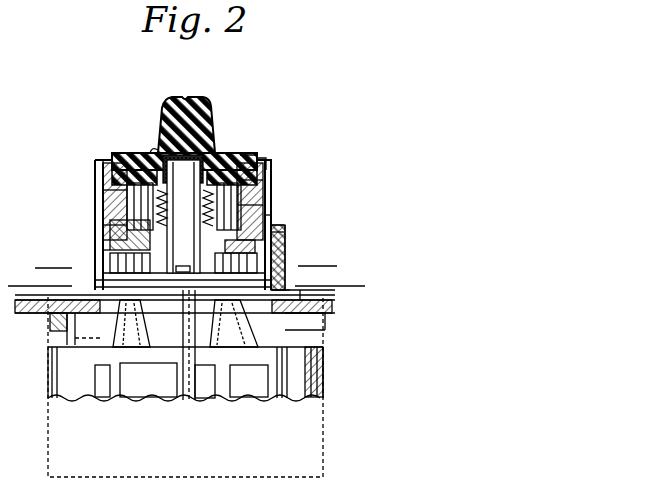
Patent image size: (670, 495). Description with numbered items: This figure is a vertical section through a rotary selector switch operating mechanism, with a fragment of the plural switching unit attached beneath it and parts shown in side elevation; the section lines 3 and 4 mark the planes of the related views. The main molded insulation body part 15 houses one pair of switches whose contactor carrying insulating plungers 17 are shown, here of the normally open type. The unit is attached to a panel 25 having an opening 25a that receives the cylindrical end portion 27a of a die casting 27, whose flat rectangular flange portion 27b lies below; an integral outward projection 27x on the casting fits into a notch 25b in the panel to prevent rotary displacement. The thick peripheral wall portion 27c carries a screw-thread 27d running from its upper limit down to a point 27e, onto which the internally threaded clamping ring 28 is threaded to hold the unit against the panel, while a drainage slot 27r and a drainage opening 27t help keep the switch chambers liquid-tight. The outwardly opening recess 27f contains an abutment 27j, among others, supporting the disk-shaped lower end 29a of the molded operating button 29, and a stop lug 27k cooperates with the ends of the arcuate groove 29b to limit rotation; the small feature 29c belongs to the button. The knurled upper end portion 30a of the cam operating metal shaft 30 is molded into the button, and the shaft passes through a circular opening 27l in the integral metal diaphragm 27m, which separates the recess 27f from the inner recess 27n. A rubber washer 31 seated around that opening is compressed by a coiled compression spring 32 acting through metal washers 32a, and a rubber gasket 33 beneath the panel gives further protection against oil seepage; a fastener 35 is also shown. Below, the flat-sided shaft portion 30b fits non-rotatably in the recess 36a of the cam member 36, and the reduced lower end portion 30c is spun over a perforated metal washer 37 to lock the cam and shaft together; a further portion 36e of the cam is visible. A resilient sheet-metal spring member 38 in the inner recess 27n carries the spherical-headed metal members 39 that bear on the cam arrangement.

The section line 3- 3 is at (42, 282).
The section line 4- 4 is at (17, 266).
The main molded insulation body part 15 is at (65, 385).
The contactor carrying insulating plunger 17 is at (125, 348).
The panel 25 is at (325, 304).
The opening 25a is at (310, 318).
The notch 25b is at (50, 321).
The die casting 27 is at (273, 196).
The cylindrical end portion 27a is at (273, 186).
The flange portion 27b is at (320, 331).
The peripheral wall portion 27c is at (100, 272).
The screw-thread 27d is at (283, 246).
The point 27e is at (286, 284).
The outwardly opening recess 27f is at (104, 170).
The abutment 27j is at (112, 197).
The stop lug 27k is at (272, 171).
The circular opening 27l is at (112, 228).
The integral metal diaphragm 27m is at (275, 226).
The inner recess 27n is at (278, 233).
The drainage slot 27r is at (284, 259).
The drainage opening 27t is at (272, 220).
The outward projection 27x is at (75, 341).
The clamping ring 28 is at (112, 234).
The operating button 29 is at (214, 124).
The disk-shaped lower end 29a is at (152, 152).
The arcuate groove 29b is at (262, 160).
The knob notch 29c is at (186, 98).
The cam operating metal shaft 30 is at (190, 223).
The upper end portion 30a is at (214, 147).
The flat-sided shaft portion 30b is at (138, 350).
The reduced lower end portion 30c is at (189, 400).
The rubber washer 31 is at (270, 210).
The coiled compression spring 32 is at (135, 153).
The metal washer 32a is at (242, 156).
The rubber gasket 33 is at (64, 332).
The screw 35 is at (316, 300).
The cam member 36 is at (160, 400).
The recess 36a is at (120, 400).
The contact blade 36e is at (220, 400).
The perforated metal washer 37 is at (206, 346).
The spring member 38 is at (104, 252).
The metal member 39 is at (183, 266).